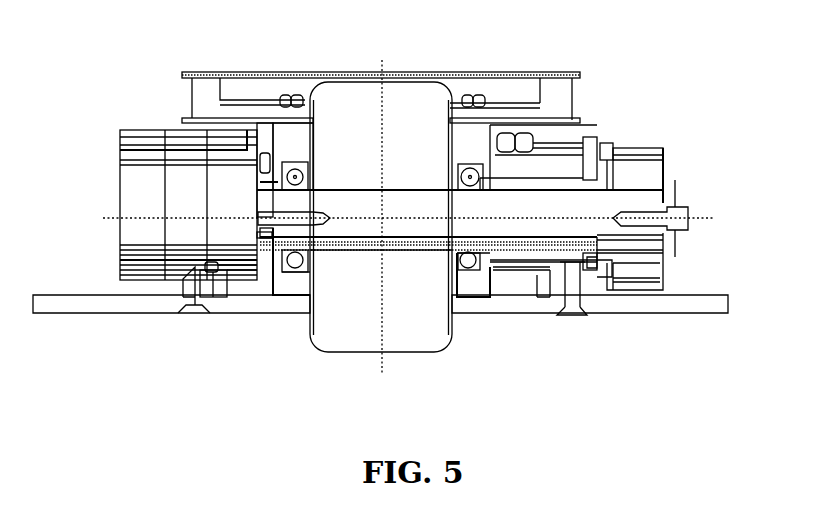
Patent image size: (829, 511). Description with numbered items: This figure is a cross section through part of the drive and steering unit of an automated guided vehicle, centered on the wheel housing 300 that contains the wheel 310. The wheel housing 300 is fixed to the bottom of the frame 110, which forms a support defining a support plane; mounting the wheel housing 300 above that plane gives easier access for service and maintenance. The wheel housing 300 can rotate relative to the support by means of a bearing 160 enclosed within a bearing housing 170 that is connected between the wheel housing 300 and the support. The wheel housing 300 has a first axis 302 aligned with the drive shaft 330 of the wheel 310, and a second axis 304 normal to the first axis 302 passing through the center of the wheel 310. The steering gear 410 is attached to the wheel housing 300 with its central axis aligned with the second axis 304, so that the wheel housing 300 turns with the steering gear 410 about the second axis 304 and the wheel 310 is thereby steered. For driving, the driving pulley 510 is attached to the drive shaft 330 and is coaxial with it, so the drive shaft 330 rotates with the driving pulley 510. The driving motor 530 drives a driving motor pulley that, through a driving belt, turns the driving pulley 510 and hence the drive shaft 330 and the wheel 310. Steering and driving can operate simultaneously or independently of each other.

The frame 110 is at (707, 295).
The bearing 160 is at (213, 287).
The bearing housing 170 is at (185, 297).
The wheel housing 300 is at (477, 283).
The first axis 302 is at (700, 217).
The second axis 304 is at (382, 60).
The wheel 310 is at (342, 103).
The drive shaft 330 is at (523, 213).
The steering gear 410 is at (562, 92).
The driving pulley 510 is at (647, 170).
The driving motor 530 is at (132, 143).